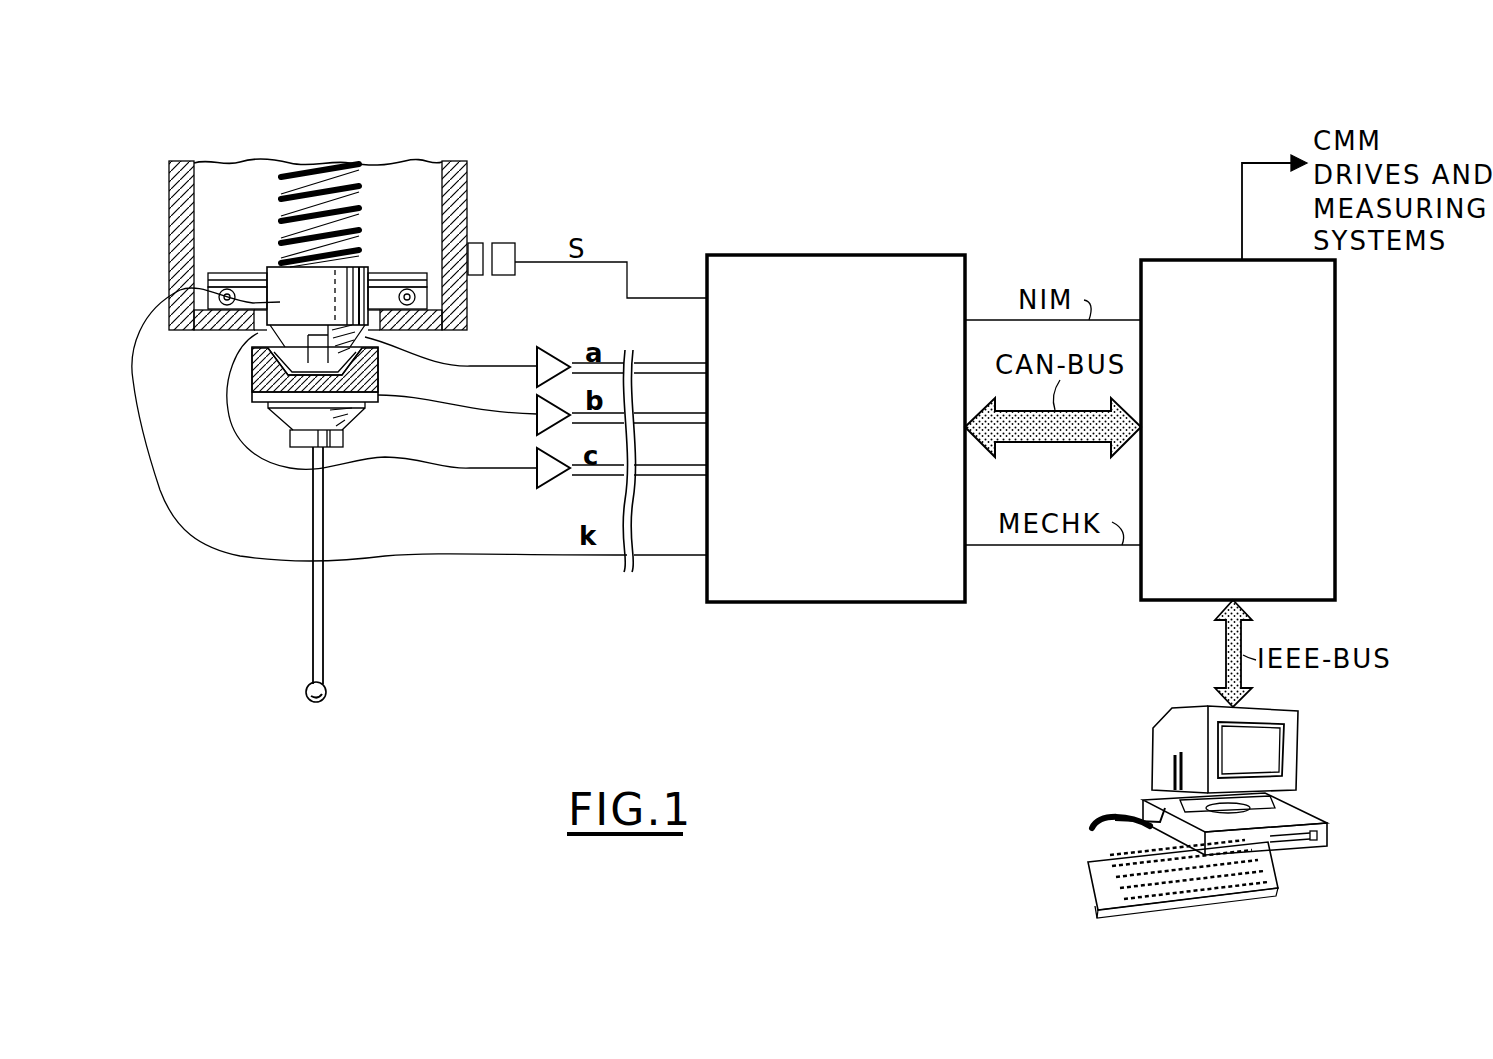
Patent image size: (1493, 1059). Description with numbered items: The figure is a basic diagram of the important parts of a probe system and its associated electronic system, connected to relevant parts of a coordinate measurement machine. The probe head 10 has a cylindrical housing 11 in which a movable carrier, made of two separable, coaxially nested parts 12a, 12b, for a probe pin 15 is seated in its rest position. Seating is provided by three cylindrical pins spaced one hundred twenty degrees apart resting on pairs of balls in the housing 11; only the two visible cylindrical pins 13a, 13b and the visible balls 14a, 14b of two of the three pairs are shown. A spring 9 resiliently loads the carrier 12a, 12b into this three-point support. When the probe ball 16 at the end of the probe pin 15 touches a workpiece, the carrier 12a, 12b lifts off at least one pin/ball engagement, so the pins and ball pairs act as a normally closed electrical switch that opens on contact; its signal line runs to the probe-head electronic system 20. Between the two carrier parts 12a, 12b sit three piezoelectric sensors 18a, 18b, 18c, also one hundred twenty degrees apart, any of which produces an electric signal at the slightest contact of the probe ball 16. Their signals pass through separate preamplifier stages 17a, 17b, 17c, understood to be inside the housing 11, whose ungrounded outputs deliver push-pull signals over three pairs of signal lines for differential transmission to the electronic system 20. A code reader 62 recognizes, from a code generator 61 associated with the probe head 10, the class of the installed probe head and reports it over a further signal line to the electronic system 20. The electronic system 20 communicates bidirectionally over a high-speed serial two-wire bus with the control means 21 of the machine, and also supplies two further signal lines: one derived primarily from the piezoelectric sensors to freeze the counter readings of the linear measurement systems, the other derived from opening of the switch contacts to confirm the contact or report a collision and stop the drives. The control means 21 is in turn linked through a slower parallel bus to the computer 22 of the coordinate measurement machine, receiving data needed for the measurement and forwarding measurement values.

The spring 9 is at (320, 168).
The probe head 10 is at (372, 128).
The cylindrical housing 11 is at (175, 227).
The carrier part 12a is at (235, 325).
The carrier part 12b is at (252, 342).
The cylindrical pin 13a is at (248, 280).
The cylindrical pin 13b is at (387, 283).
The pair of balls 14a is at (227, 288).
The pair of balls 14b is at (408, 288).
The probe pin 15 is at (323, 598).
The probe ball 16 is at (320, 688).
The preamplifier stage 17a is at (548, 357).
The preamplifier stage 17b is at (540, 420).
The preamplifier stage 17c is at (542, 478).
The piezoelectric sensor 18a is at (372, 360).
The piezoelectric sensor 18b is at (317, 357).
The piezoelectric sensor 18c is at (263, 398).
The probe-head electronic system 20 is at (862, 573).
The control means 21 is at (1320, 530).
The computer 22 is at (1293, 814).
The code generator 61 is at (477, 242).
The code reader 62 is at (511, 243).